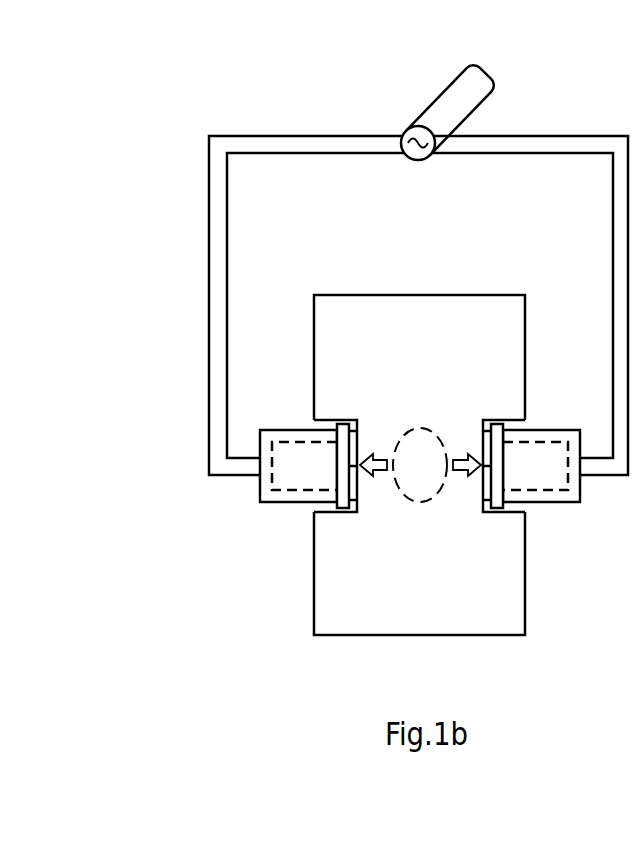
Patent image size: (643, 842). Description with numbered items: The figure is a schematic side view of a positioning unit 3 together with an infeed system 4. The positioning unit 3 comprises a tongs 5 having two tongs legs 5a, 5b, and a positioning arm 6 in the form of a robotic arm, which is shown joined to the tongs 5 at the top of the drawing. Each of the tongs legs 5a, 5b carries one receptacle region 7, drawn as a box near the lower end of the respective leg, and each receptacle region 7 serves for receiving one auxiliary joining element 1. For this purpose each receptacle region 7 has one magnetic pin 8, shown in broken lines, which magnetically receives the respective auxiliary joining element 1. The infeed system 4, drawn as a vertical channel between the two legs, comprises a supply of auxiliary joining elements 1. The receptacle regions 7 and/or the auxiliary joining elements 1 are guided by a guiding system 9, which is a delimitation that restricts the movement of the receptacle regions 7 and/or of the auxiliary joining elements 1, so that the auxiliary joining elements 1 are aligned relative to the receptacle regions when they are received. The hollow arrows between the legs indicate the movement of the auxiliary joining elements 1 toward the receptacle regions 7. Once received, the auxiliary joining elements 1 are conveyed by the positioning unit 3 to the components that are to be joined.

The auxiliary joining element 1 is at (343, 449).
The positioning unit 3 is at (187, 71).
The infeed system 4 is at (345, 673).
The tongs 5 is at (184, 240).
The tongs leg 5a is at (288, 145).
The tongs leg 5b is at (563, 142).
The positioning arm 6 is at (452, 88).
The receptacle region 7 is at (265, 526).
The magnetic pin 8 is at (280, 456).
The guiding system 9 is at (336, 521).